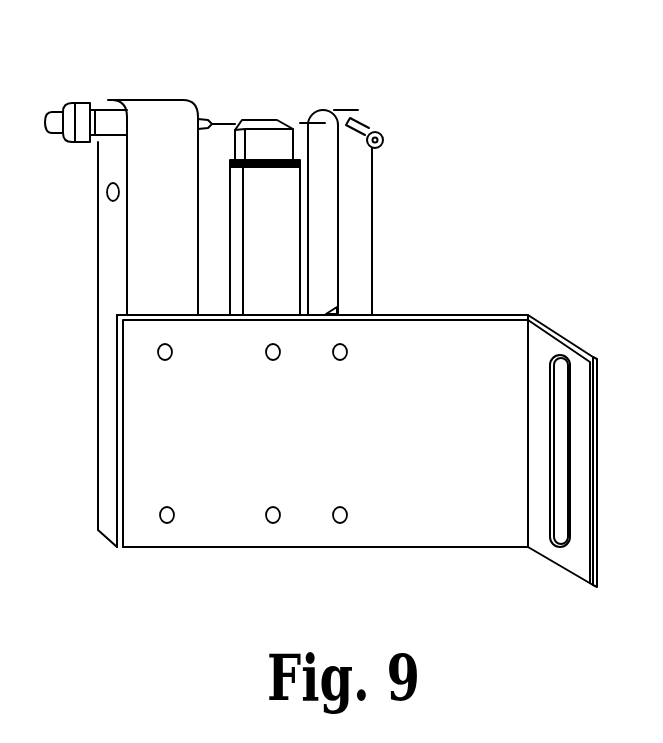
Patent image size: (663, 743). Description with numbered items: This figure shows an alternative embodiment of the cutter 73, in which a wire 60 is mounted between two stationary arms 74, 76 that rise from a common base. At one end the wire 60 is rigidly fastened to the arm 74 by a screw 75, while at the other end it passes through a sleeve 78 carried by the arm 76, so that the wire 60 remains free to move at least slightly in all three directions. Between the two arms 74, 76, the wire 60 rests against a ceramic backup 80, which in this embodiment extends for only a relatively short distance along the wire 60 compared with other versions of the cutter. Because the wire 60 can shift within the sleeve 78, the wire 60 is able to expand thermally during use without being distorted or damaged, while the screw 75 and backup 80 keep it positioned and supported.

The cutter 73 is at (94, 275).
The arm 74 is at (358, 108).
The screw 75 is at (383, 140).
The arm 76 is at (155, 123).
The sleeve 78 is at (100, 112).
The wire 60 is at (227, 121).
The ceramic backup 80 is at (273, 147).